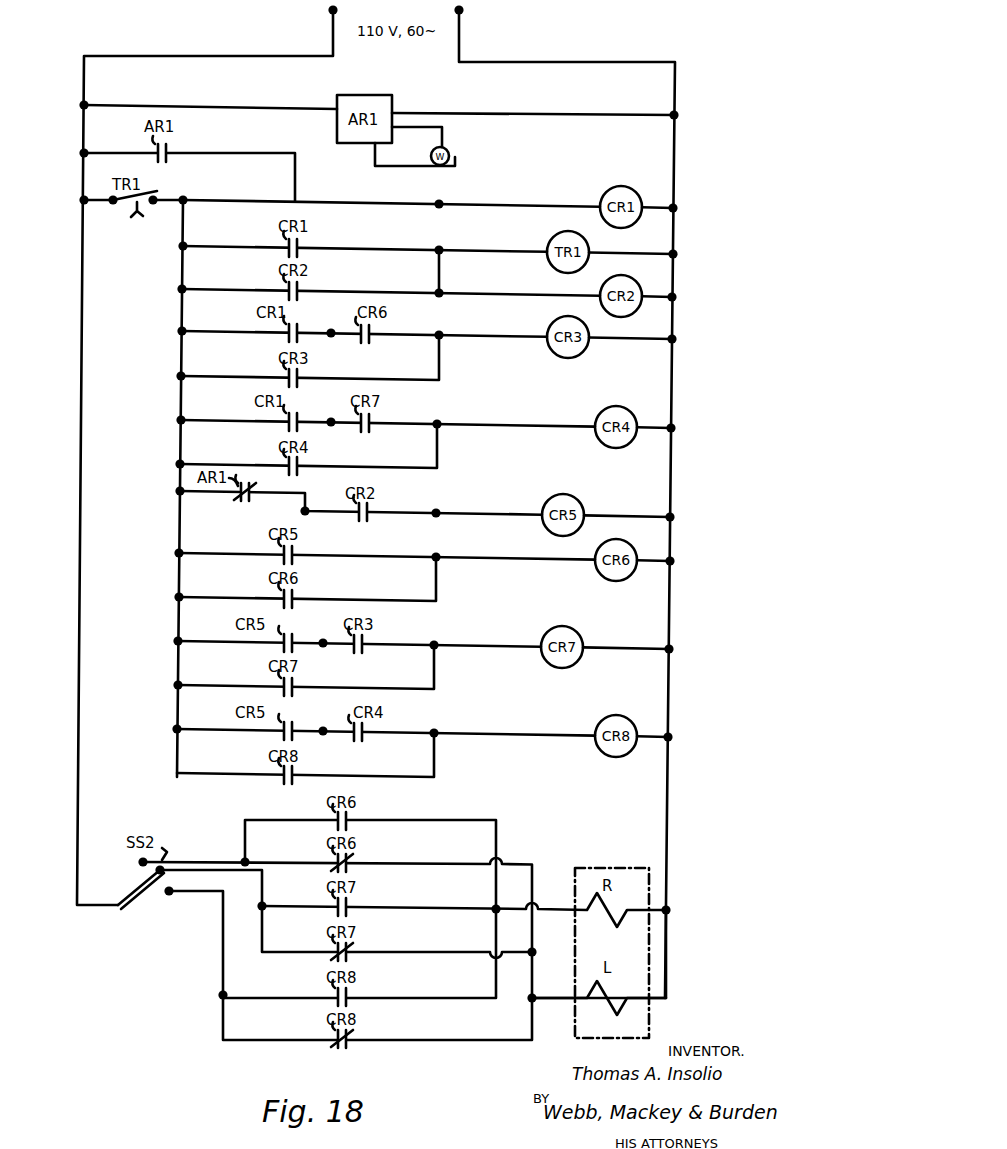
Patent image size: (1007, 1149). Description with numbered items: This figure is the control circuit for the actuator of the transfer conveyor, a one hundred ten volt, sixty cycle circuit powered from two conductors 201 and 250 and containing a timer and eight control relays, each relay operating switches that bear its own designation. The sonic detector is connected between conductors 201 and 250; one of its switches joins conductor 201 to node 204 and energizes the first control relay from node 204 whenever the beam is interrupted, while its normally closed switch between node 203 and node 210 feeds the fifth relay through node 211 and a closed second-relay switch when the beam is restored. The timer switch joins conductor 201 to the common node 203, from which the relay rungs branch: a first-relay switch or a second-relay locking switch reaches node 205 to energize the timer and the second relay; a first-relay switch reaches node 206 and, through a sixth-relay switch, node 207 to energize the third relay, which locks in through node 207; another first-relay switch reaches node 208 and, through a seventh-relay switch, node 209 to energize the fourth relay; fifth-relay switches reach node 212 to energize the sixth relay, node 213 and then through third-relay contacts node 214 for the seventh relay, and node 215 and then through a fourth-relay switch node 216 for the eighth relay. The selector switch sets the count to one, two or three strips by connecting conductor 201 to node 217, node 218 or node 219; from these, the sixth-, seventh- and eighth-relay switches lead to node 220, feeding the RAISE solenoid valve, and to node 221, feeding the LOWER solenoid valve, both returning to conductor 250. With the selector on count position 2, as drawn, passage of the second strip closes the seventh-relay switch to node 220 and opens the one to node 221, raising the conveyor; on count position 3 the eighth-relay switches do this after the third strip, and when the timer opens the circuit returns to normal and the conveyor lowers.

The conductor 201 is at (330, 13).
The conductor 250 is at (465, 20).
The circuit node 203 is at (186, 203).
The circuit node 204 is at (441, 196).
The circuit node 205 is at (443, 246).
The circuit node 206 is at (343, 320).
The circuit node 207 is at (440, 334).
The circuit node 208 is at (331, 420).
The circuit node 209 is at (438, 421).
The circuit node 210 is at (322, 492).
The circuit node 211 is at (436, 509).
The circuit node 212 is at (436, 554).
The circuit node 213 is at (330, 632).
The circuit node 214 is at (434, 642).
The circuit node 215 is at (336, 720).
The circuit node 216 is at (434, 730).
The circuit node 217 is at (247, 863).
The circuit node 218 is at (263, 907).
The circuit node 219 is at (224, 995).
The circuit node 220 is at (493, 908).
The circuit node 221 is at (534, 954).
The selector switch count position 2 is at (152, 876).
The selector switch count position 3 is at (168, 893).